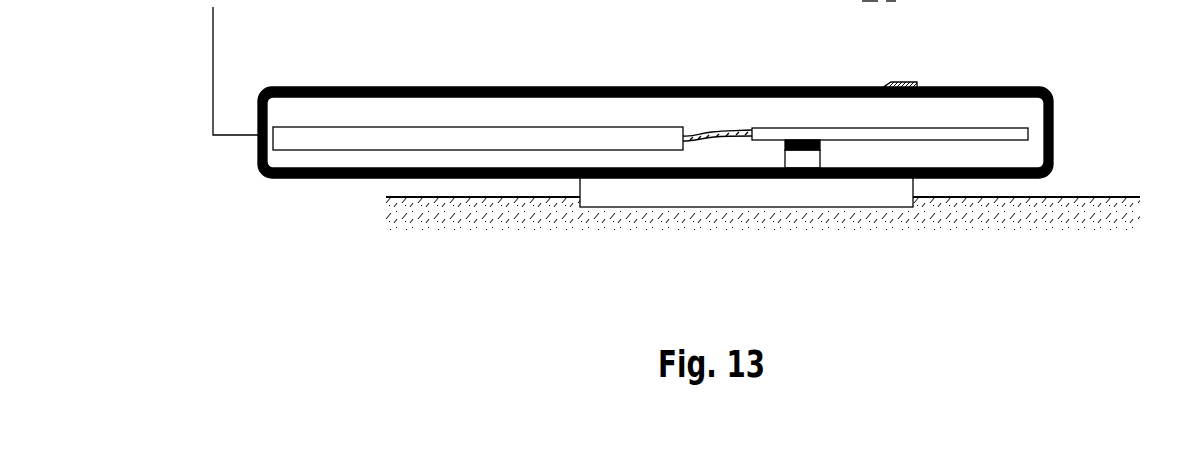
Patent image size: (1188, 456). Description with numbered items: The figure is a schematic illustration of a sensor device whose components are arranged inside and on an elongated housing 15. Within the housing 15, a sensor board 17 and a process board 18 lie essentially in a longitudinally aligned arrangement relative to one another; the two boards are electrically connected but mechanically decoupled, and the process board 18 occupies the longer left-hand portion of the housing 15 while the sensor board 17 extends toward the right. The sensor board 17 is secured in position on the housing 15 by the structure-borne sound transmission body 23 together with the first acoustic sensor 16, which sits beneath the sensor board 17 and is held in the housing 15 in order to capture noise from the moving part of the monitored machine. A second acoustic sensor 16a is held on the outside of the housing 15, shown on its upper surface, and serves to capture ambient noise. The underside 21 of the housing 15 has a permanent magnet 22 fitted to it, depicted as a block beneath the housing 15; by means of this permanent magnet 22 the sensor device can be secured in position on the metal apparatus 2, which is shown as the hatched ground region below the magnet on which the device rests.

The metal apparatus 2 is at (545, 222).
The housing 15 is at (258, 155).
The first acoustic sensor 16 is at (810, 150).
The second acoustic sensor 16a is at (913, 85).
The sensor board 17 is at (923, 136).
The process board 18 is at (450, 145).
The underside 21 is at (1013, 177).
The permanent magnet 22 is at (665, 200).
The structure-borne sound transmission body 23 is at (800, 172).